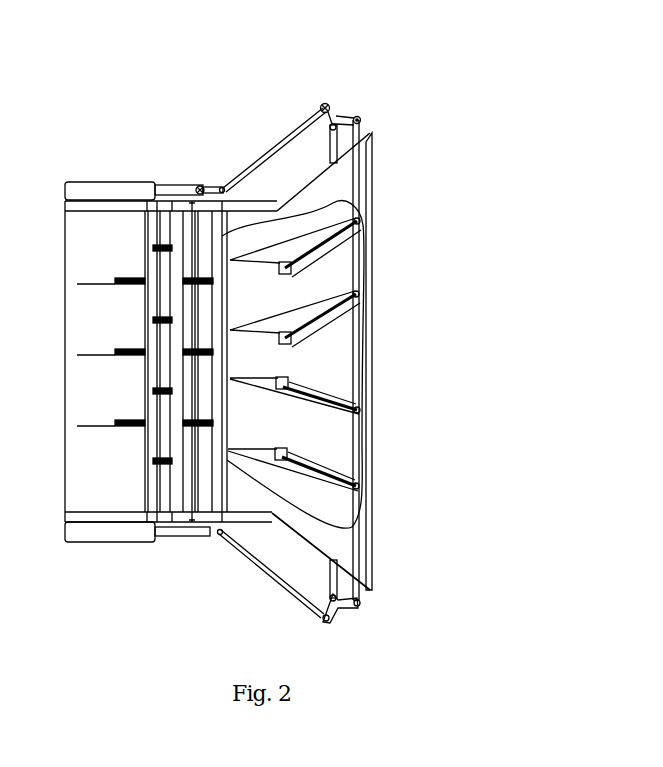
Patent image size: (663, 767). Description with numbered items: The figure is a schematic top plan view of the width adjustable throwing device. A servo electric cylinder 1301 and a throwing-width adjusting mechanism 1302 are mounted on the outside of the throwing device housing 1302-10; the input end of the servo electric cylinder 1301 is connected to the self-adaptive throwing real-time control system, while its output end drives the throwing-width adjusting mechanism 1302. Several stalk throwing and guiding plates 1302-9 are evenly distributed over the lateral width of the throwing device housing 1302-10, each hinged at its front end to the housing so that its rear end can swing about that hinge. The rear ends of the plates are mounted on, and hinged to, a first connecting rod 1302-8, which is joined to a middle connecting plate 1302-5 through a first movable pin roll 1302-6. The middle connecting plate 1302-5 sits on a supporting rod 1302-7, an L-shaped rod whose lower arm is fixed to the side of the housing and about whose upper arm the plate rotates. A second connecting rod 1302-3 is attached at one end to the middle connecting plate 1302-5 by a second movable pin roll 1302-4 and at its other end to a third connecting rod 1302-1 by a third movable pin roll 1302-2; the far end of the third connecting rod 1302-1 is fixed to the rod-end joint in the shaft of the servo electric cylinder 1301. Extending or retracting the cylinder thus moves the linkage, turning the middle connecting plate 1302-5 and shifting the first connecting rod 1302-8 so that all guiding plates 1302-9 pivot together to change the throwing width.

The servo electric cylinder 1301 is at (88, 193).
The throwing-width adjusting mechanism 1302 is at (312, 358).
The third connecting rod 1302-1 is at (207, 186).
The third movable pin roll 1302-2 is at (222, 188).
The second connecting rod 1302-3 is at (223, 187).
The second movable pin roll 1302-4 is at (330, 105).
The middle connecting plate 1302-5 is at (336, 112).
The first movable pin roll 1302-6 is at (358, 118).
The supporting rod 1302-7 is at (333, 140).
The first connecting rod 1302-8 is at (358, 200).
The stalk throwing and guiding plate 1302-9 is at (327, 233).
The throwing device housing 1302-10 is at (322, 532).